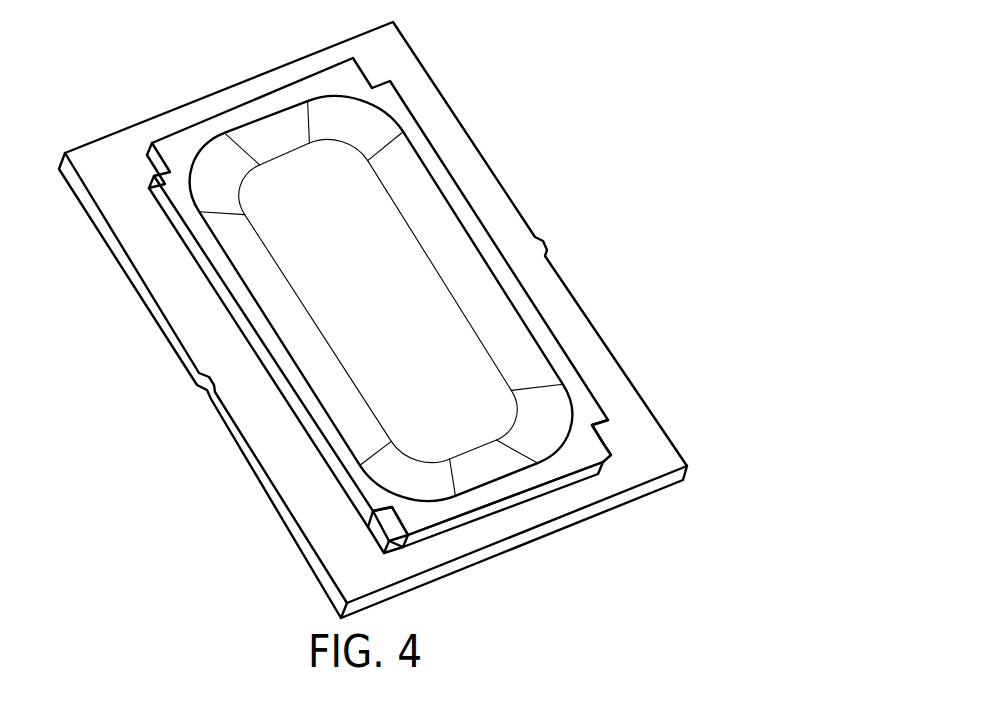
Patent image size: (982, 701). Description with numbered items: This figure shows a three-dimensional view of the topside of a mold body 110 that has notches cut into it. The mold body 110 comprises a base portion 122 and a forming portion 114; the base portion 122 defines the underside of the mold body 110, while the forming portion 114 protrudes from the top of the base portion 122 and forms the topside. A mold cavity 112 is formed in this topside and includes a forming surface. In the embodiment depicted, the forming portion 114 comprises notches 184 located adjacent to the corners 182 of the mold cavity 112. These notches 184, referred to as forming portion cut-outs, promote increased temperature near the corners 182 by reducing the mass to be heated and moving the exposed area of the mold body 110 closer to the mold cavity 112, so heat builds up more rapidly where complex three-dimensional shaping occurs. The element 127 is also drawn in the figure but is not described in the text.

The housing base plate 110 is at (632, 375).
The recess floor 112 is at (293, 172).
The frame 114 is at (420, 147).
The channel ledge 122 is at (512, 217).
The recess sidewall 127 is at (538, 340).
The rail lip 182 is at (570, 450).
The locating tab 184 is at (600, 438).